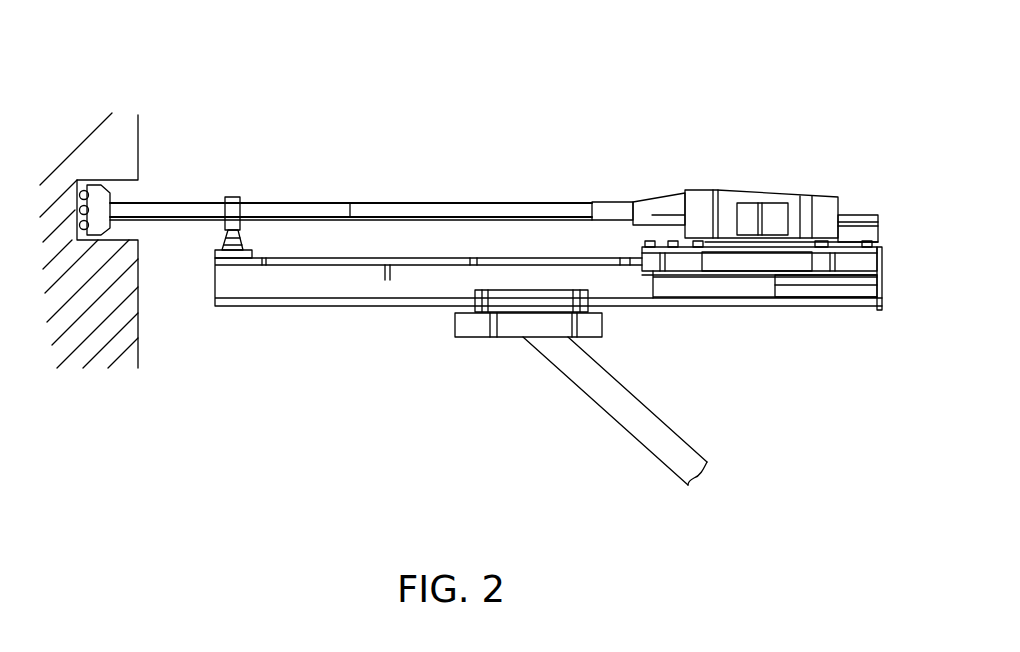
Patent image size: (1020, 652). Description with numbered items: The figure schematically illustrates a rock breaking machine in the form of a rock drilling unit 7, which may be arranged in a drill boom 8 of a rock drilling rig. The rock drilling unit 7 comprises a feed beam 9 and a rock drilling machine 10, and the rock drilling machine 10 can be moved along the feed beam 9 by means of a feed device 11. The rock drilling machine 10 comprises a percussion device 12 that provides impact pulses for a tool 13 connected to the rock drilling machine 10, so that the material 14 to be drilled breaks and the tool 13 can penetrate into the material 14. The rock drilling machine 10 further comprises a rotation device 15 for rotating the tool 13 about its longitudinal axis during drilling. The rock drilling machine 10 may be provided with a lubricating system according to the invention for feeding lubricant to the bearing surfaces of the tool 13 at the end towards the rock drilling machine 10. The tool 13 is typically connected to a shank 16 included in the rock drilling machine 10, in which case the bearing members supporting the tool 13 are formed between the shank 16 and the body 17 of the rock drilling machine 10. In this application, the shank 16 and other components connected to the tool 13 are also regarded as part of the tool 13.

The rock drilling unit 7 is at (463, 92).
The drill boom 8 is at (645, 422).
The feed beam 9 is at (350, 282).
The rock drilling machine 10 is at (728, 152).
The feed device 11 is at (793, 285).
The percussion device 12 is at (697, 207).
The tool 13 is at (412, 186).
The material 14 is at (117, 160).
The rotation device 15 is at (776, 214).
The shank 16 is at (618, 202).
The body 17 is at (657, 192).